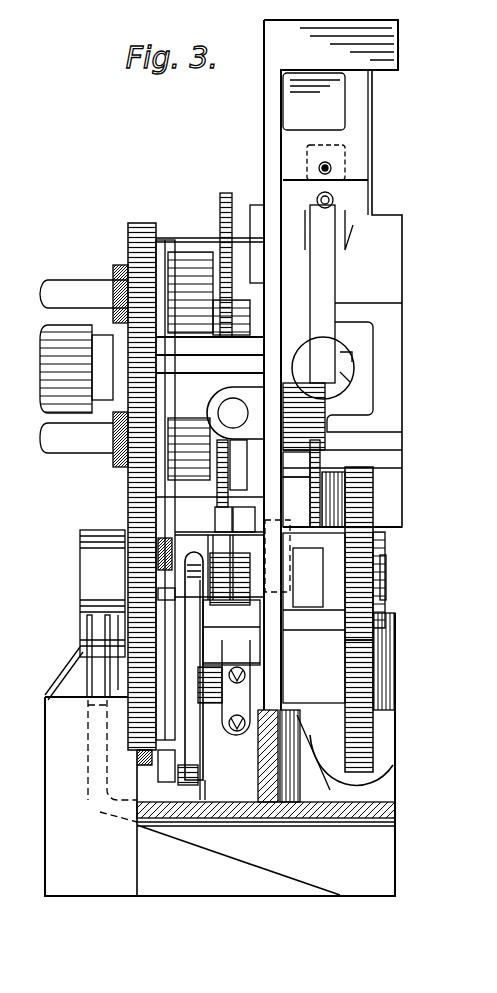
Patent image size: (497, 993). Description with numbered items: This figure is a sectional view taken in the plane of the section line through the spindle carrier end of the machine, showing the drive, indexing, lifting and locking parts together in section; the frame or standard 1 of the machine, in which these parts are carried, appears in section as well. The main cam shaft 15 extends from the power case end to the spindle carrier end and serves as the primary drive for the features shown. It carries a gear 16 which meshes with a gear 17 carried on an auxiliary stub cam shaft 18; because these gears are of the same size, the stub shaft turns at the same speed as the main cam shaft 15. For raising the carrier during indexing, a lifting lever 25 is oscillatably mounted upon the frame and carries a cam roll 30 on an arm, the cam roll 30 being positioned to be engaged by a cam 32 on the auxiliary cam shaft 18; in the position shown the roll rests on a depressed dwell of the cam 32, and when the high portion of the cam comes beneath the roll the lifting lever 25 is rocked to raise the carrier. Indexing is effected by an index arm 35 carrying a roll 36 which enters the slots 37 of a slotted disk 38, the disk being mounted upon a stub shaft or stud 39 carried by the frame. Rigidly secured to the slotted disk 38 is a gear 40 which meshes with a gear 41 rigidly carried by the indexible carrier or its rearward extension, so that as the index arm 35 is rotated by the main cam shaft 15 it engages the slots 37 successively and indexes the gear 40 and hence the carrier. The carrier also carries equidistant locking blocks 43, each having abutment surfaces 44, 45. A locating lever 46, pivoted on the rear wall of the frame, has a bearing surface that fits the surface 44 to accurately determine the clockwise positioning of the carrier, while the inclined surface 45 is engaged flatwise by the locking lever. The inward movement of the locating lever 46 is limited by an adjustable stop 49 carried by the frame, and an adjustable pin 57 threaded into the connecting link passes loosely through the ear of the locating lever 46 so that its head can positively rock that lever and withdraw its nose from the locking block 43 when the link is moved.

The frame standard 1 is at (270, 108).
The main cam shaft 15 is at (388, 655).
The gear 16 is at (367, 730).
The gear 17 is at (357, 545).
The auxiliary stub cam shaft 18 is at (383, 578).
The lifting lever 25 is at (241, 697).
The cam roll 30 is at (217, 516).
The cam 32 is at (217, 530).
The index arm 35 is at (190, 738).
The roll 36 is at (172, 772).
The slots 37 is at (160, 555).
The slotted disk 38 is at (165, 595).
The stub shaft or stud 39 is at (120, 612).
The gear 40 is at (140, 533).
The gear 41 is at (128, 478).
The locking blocks 43 is at (377, 365).
The abutment surface 44 is at (347, 377).
The inclined abutment surface 45 is at (350, 358).
The locating lever 46 is at (330, 293).
The adjustable stop 49 is at (333, 168).
The adjustable pin 57 is at (335, 200).